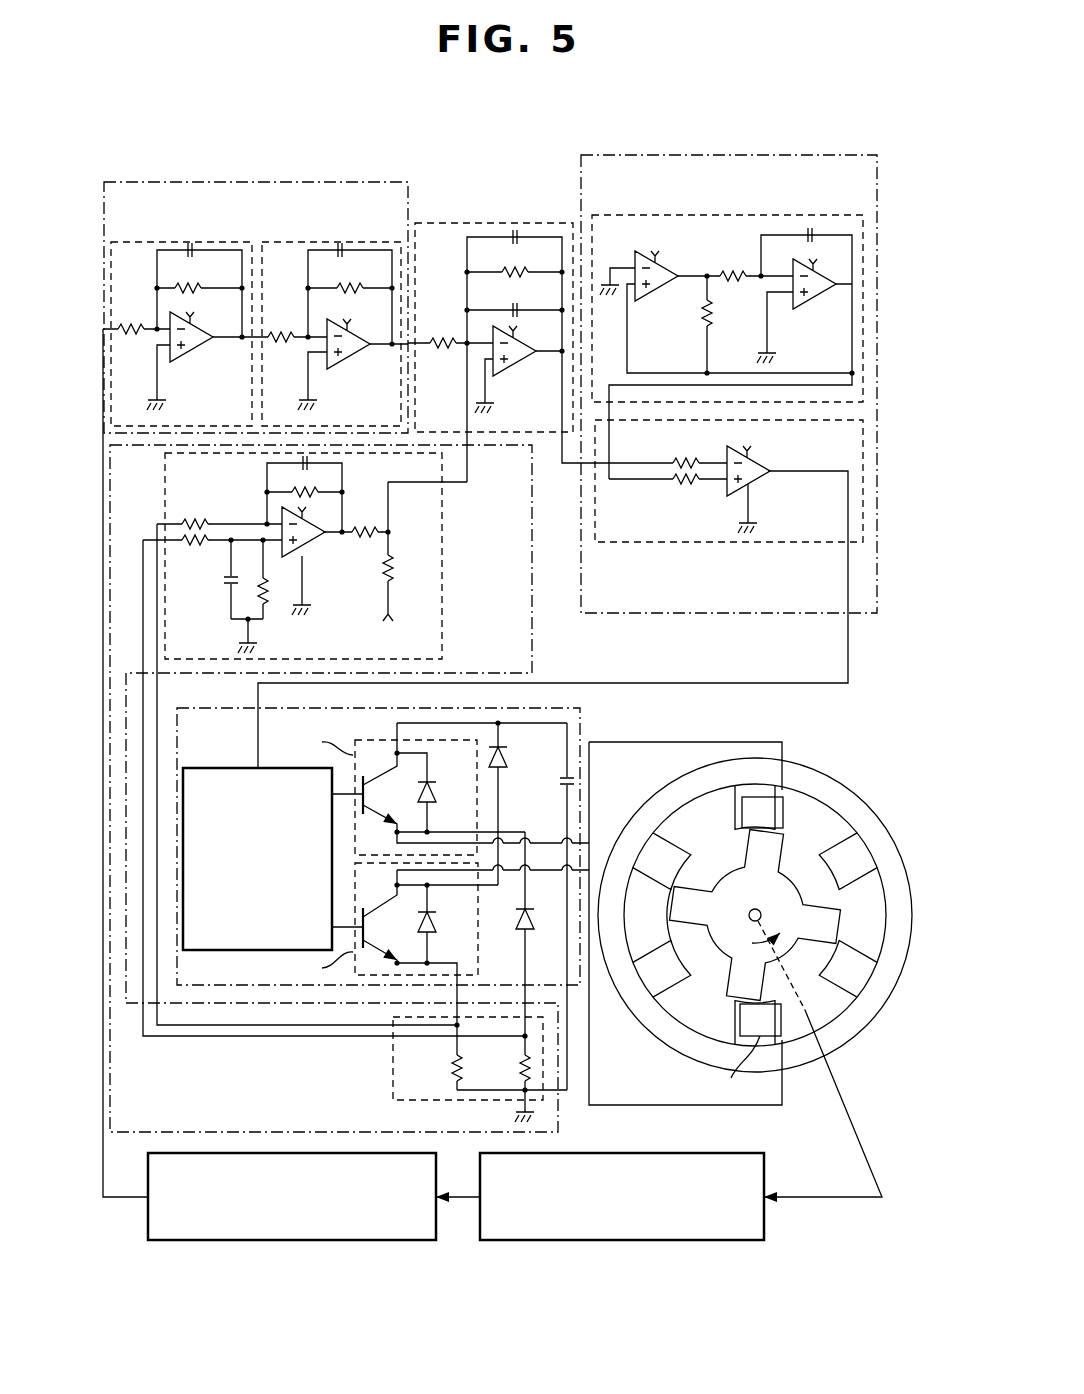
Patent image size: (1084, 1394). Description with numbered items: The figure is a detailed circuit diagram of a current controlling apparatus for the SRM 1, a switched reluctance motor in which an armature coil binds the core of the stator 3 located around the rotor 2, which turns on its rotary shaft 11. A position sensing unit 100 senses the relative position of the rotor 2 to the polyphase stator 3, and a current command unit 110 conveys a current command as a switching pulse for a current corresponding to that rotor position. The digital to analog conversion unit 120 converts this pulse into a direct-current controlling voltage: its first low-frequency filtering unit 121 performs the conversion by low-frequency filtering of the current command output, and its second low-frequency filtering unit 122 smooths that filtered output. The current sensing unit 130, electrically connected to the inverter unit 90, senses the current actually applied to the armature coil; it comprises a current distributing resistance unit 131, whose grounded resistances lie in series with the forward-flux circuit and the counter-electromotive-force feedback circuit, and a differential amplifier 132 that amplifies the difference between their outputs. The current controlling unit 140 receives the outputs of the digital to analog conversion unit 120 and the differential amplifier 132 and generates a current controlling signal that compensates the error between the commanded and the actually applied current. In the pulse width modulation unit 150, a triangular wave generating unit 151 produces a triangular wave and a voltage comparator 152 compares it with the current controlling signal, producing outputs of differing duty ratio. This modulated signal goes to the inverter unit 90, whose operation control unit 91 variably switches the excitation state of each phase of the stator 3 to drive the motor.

The SRM 1 is at (864, 781).
The rotor 2 is at (833, 927).
The stator 3 is at (905, 900).
The rotary shaft 11 is at (770, 910).
The inverter unit 90 is at (582, 716).
The operation control unit 91 is at (225, 768).
The position sensing unit 100 is at (620, 1242).
The current command unit 110 is at (292, 1242).
The digital to analog conversion unit 120 is at (258, 180).
The first low-frequency filtering unit 121 is at (188, 240).
The second low-frequency filtering unit 122 is at (337, 240).
The current sensing unit 130 is at (533, 648).
The current distributing resistance unit 131 is at (393, 1078).
The differential amplifier 132 is at (443, 583).
The current controlling unit 140 is at (505, 222).
The pulse width modulation unit 150 is at (760, 155).
The triangular wave generating unit 151 is at (705, 215).
The voltage comparator 152 is at (725, 545).